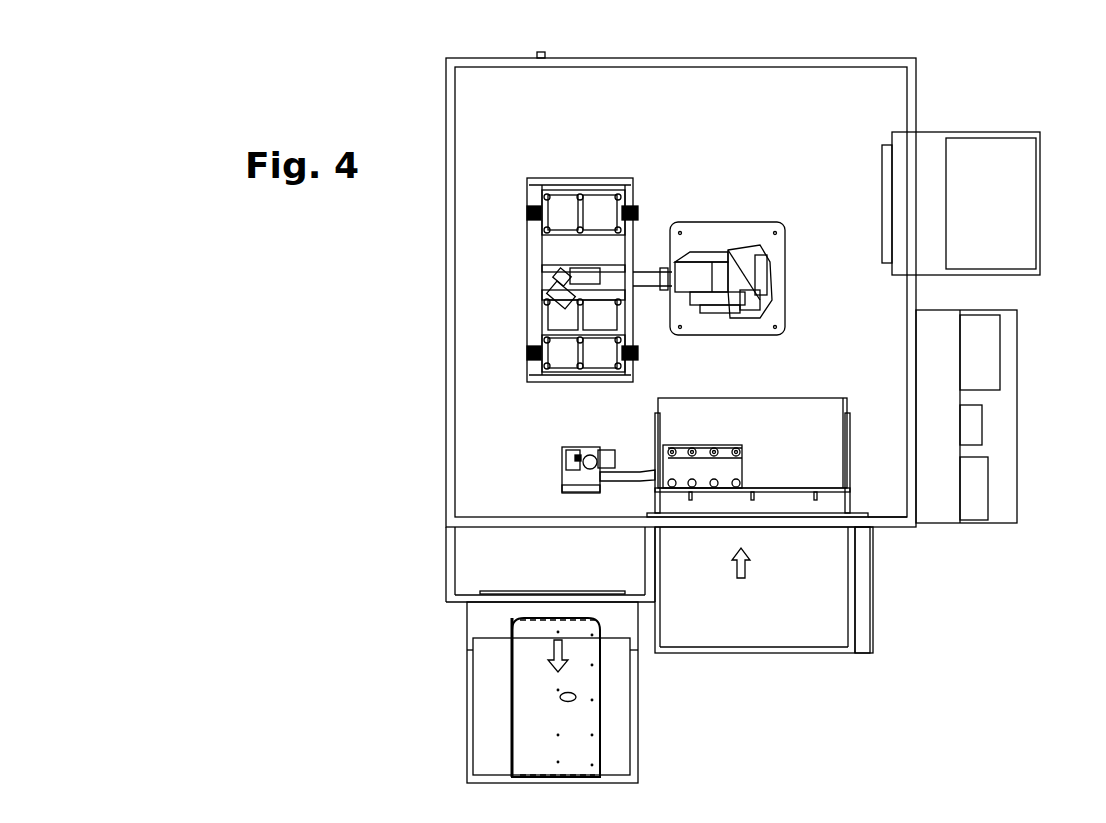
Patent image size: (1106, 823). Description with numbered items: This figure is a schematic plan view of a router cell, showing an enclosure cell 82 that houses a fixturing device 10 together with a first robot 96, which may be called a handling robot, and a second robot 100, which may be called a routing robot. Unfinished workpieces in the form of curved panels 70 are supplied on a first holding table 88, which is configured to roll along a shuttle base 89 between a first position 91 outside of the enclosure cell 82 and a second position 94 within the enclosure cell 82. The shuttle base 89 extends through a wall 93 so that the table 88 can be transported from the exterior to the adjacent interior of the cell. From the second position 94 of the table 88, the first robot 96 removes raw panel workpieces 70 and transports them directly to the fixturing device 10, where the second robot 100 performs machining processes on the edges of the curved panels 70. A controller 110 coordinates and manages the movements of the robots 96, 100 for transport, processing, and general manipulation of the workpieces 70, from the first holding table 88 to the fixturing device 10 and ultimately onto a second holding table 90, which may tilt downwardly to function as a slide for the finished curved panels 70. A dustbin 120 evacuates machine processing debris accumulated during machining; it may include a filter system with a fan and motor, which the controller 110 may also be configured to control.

The fixturing device 10 is at (535, 178).
The curved panels 70 is at (530, 723).
The enclosure cell 82 is at (878, 58).
The first holding table 88 is at (790, 417).
The shuttle base 89 is at (877, 636).
The second holding table 90 is at (485, 672).
The first position 91 is at (818, 628).
The wall 93 is at (901, 528).
The second position 94 is at (820, 412).
The first robot 96 is at (565, 447).
The second robot 100 is at (727, 246).
The controller 110 is at (988, 493).
The dustbin 120 is at (1040, 223).